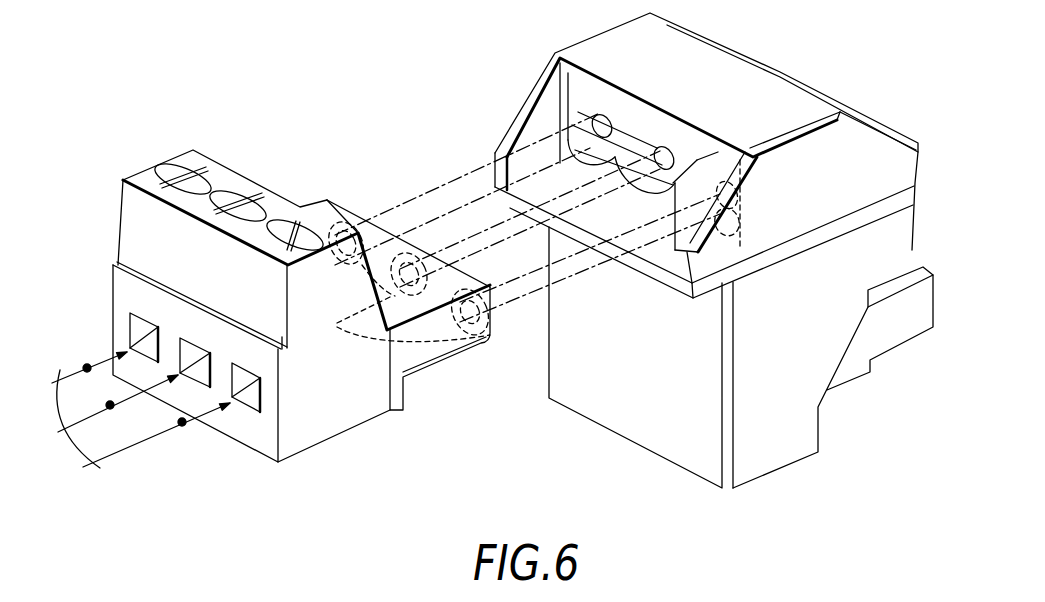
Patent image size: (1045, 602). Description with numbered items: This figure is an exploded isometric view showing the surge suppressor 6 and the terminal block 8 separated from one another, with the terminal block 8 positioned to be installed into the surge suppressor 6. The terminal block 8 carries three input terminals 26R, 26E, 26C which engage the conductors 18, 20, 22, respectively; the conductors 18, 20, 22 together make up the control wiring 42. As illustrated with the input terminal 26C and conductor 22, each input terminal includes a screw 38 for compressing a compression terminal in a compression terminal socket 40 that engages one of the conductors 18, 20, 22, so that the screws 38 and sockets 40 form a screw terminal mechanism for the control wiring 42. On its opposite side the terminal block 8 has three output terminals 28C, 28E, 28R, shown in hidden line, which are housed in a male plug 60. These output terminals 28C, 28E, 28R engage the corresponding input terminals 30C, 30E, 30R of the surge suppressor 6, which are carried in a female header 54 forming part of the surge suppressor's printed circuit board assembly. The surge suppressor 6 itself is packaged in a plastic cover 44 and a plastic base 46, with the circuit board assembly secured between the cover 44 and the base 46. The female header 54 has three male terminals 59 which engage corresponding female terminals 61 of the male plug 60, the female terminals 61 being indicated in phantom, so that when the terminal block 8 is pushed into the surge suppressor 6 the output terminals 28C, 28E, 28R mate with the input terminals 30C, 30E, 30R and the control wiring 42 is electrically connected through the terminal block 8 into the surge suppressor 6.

The surge suppressor 6 is at (690, 250).
The terminal block 8 is at (332, 423).
The conductor 18 is at (183, 425).
The conductor 20 is at (112, 407).
The conductor 22 is at (87, 366).
The input terminal 26C is at (186, 146).
The input terminal 26E is at (239, 173).
The input terminal 26R is at (296, 206).
The output terminal 28C is at (350, 222).
The output terminal 28E is at (410, 253).
The output terminal 28R is at (481, 333).
The input terminal 30C is at (510, 148).
The input terminal 30E is at (642, 194).
The input terminal 30R is at (730, 265).
The screw 38 is at (177, 196).
The compression terminal socket 40 is at (130, 313).
The control wiring 42 is at (100, 468).
The plastic cover 44 is at (812, 388).
The plastic base 46 is at (628, 427).
The female header 54 is at (562, 102).
The male terminals 59 is at (718, 210).
The male plug 60 is at (422, 352).
The female terminals 61 is at (401, 304).